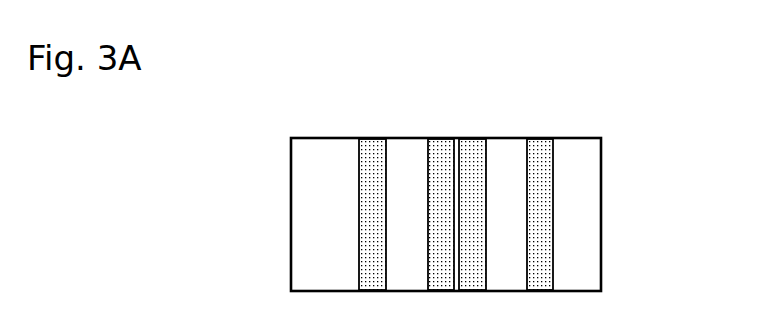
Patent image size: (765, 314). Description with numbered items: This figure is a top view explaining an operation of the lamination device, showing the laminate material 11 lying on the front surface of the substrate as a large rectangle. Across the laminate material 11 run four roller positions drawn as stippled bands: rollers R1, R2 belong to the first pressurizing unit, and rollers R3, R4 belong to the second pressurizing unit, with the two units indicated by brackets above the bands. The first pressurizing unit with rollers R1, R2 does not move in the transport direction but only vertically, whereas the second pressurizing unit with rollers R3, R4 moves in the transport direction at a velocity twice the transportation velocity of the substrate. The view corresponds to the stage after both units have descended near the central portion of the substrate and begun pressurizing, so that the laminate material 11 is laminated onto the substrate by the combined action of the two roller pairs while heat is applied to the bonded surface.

The laminate material 11 is at (598, 172).
The roller R1 is at (380, 192).
The roller R2 is at (444, 192).
The roller R3 is at (480, 192).
The roller R4 is at (546, 192).